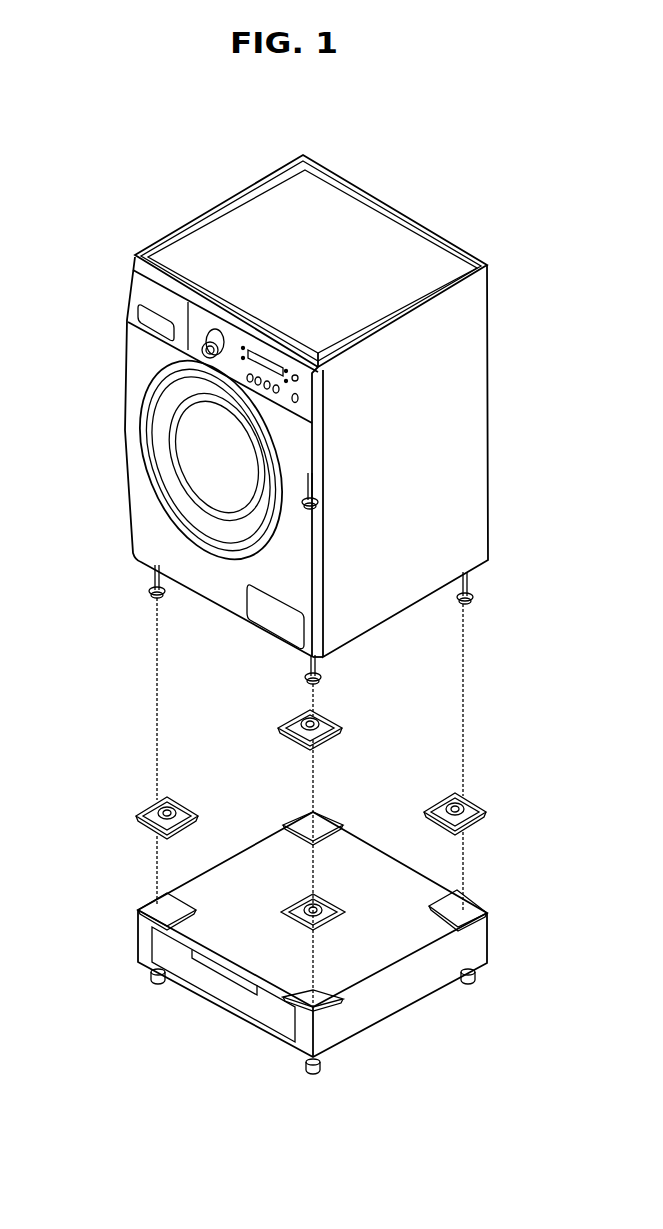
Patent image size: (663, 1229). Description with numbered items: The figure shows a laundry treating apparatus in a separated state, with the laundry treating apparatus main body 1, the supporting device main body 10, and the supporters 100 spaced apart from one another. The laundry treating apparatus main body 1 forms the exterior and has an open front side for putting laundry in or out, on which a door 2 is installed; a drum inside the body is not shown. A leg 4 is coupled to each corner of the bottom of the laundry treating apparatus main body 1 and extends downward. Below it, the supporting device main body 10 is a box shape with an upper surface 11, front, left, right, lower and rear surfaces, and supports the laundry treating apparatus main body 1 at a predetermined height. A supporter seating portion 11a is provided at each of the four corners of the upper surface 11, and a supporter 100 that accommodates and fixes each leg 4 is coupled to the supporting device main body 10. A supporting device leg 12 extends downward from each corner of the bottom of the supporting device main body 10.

The laundry treating apparatus main body 1 is at (277, 419).
The door 2 is at (143, 432).
The leg 4 is at (146, 583).
The supporter 100 is at (137, 808).
The supporting device main body 10 is at (288, 937).
The upper surface 11 is at (357, 848).
The supporter seating portion 11a is at (464, 909).
The supporting device leg 12 is at (152, 980).